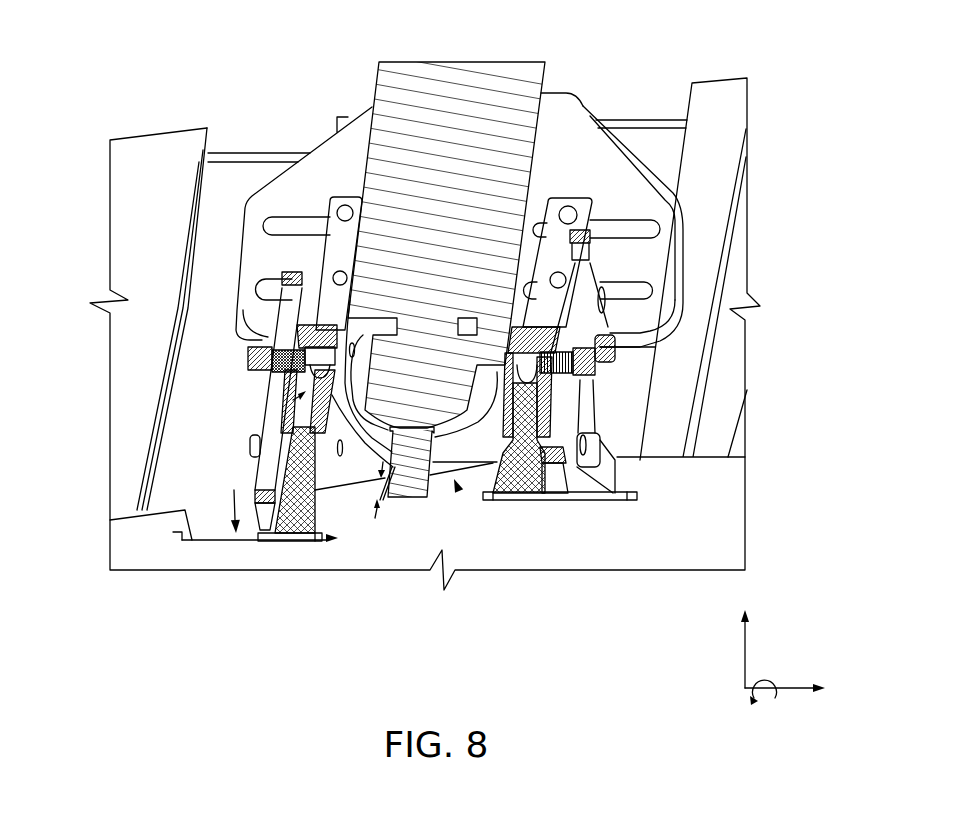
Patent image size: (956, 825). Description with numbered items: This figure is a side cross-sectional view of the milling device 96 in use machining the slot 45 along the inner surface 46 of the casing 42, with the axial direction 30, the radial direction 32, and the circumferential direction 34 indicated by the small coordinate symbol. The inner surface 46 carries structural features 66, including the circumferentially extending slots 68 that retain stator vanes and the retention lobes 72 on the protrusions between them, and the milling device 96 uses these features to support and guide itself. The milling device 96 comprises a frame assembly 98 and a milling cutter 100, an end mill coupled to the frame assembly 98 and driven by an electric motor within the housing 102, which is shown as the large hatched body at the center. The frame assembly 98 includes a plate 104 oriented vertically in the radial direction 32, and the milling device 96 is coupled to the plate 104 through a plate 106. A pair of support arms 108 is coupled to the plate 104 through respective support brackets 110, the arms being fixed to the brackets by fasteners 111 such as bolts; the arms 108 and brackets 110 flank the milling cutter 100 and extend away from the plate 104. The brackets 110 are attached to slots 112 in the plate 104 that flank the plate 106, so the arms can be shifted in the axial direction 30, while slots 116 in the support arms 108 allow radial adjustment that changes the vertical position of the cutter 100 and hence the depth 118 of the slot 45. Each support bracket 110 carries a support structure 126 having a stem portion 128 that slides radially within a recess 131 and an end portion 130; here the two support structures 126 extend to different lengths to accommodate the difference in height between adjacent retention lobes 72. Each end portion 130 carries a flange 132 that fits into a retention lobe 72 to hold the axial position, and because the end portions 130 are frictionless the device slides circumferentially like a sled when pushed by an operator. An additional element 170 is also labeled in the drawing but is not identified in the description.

The axial direction 30 is at (787, 690).
The radial direction 32 is at (747, 657).
The circumferential direction 34 is at (777, 677).
The casing 42 is at (230, 168).
The slot 45 is at (405, 470).
The inner surface 46 is at (257, 167).
The structural features 66 is at (205, 521).
The slots 68 is at (237, 498).
The retention lobes 72 is at (313, 548).
The milling device 96 is at (581, 89).
The frame assembly 98 is at (609, 116).
The milling cutter 100 is at (407, 468).
The housing 102 is at (546, 73).
The plate 104 is at (605, 152).
The plate 106 is at (513, 493).
The support arms 108 is at (240, 317).
The support brackets 110 is at (343, 197).
The fasteners 111 is at (640, 380).
The slots 112 is at (645, 273).
The slots 116 is at (640, 313).
The depth 118 is at (376, 500).
The support structure 126 is at (290, 447).
The stem portion 128 is at (280, 425).
The end portion 130 is at (273, 550).
The recess 131 is at (247, 367).
The flange 132 is at (243, 550).
The clearance 170 is at (376, 515).